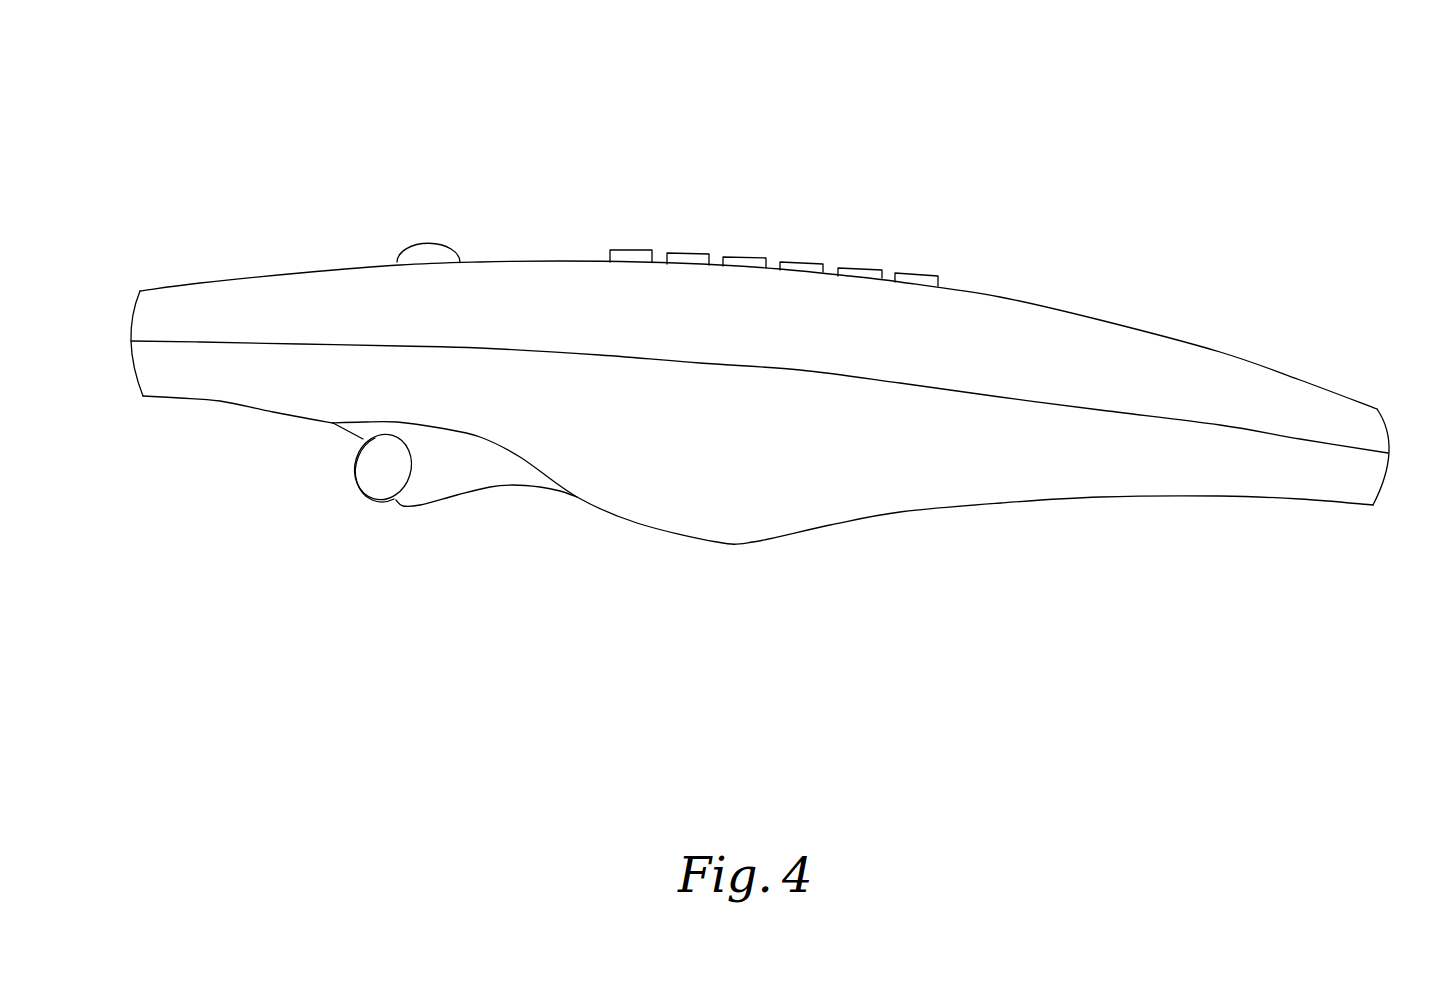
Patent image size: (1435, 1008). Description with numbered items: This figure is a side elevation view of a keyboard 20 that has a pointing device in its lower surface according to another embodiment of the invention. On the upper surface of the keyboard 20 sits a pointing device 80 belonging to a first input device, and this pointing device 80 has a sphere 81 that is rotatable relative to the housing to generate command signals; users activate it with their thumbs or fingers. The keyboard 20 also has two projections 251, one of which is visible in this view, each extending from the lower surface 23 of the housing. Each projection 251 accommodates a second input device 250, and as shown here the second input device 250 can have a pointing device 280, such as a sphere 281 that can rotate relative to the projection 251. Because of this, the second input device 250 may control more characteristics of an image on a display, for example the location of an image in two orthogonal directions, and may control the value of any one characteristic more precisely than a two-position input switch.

The keyboard 20 is at (760, 357).
The lower surface 23 is at (217, 402).
The pointing device 80 is at (439, 180).
The sphere 81 is at (428, 243).
The second input device 250 is at (853, 532).
The projection 251 is at (457, 497).
The pointing device 280 is at (324, 499).
The sphere 281 is at (357, 480).